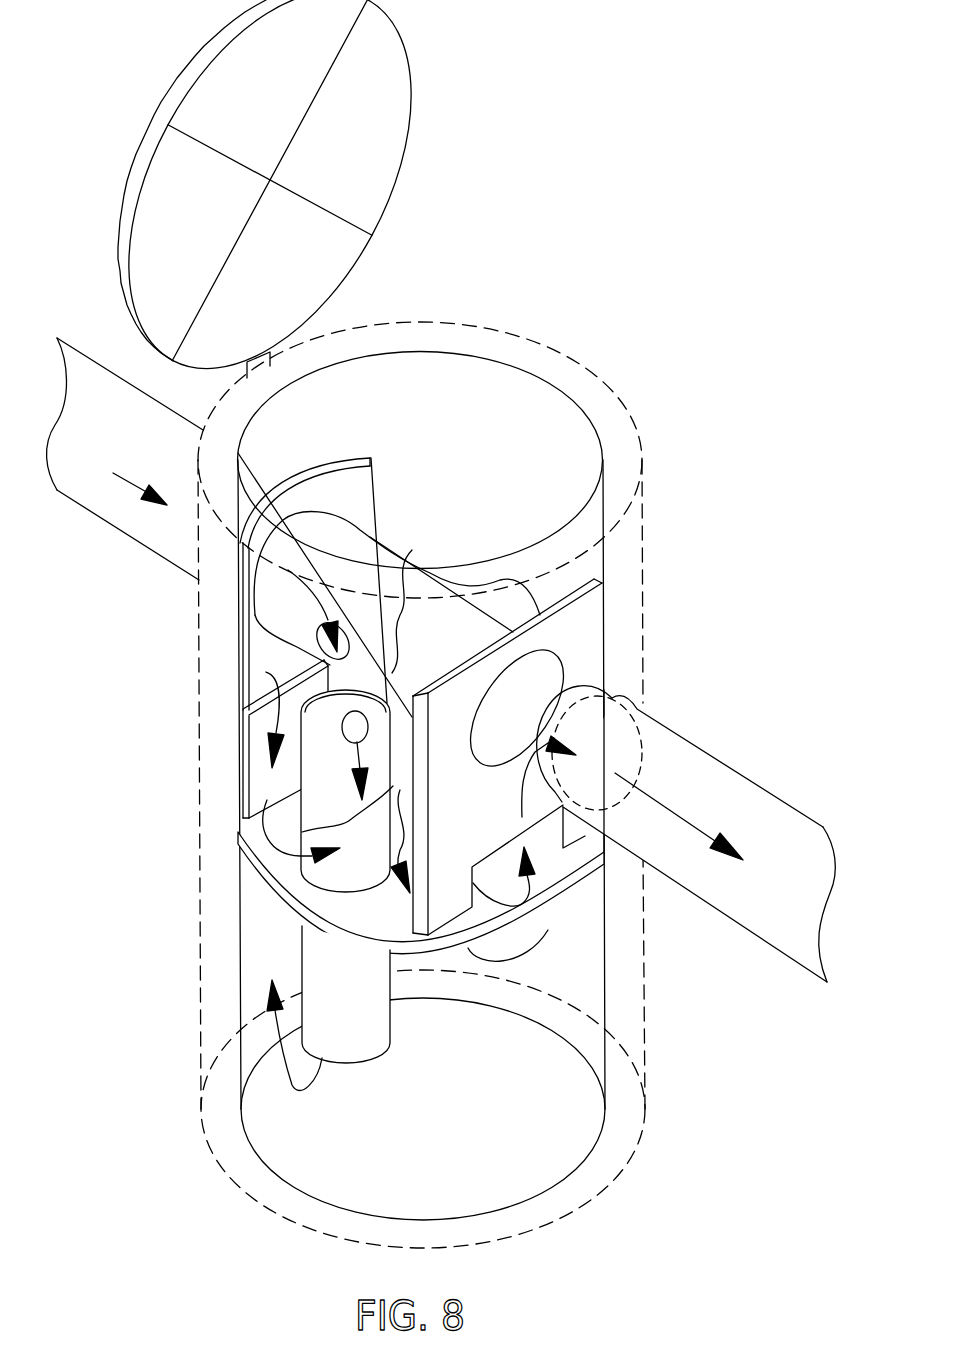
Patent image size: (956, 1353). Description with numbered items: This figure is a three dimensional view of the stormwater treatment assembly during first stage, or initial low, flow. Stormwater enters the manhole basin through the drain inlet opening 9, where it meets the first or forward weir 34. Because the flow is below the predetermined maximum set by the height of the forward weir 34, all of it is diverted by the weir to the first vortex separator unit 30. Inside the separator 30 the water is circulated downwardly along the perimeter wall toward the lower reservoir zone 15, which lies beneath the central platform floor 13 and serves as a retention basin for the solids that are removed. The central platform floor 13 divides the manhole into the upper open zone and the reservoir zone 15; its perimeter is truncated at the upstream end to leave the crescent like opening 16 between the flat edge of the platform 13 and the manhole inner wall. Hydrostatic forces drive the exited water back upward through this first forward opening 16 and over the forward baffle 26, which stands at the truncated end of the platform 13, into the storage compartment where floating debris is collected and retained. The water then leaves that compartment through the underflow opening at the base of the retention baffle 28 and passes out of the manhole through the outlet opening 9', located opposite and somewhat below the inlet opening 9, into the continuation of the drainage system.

The inlet opening 9 is at (125, 475).
The outlet opening 9' is at (686, 834).
The central platform floor 13 is at (258, 862).
The reservoir zone 15 is at (440, 1122).
The crescent like opening 16 is at (290, 672).
The forward baffle 26 is at (257, 723).
The retention baffle 28 is at (588, 650).
The first separator unit 30 is at (356, 1018).
The first or forward weir 34 is at (375, 547).